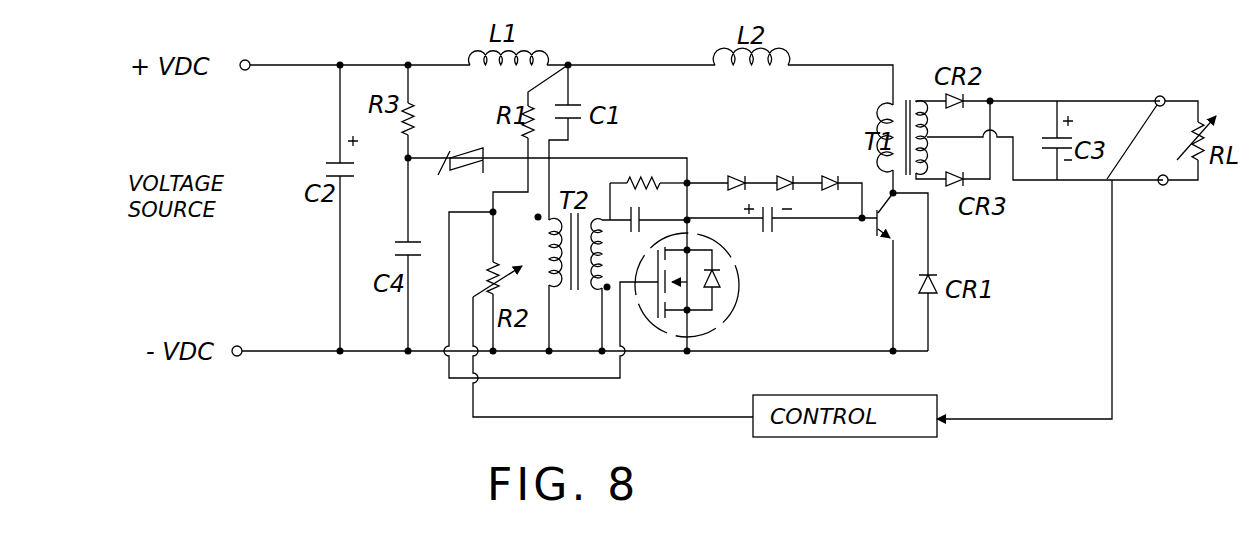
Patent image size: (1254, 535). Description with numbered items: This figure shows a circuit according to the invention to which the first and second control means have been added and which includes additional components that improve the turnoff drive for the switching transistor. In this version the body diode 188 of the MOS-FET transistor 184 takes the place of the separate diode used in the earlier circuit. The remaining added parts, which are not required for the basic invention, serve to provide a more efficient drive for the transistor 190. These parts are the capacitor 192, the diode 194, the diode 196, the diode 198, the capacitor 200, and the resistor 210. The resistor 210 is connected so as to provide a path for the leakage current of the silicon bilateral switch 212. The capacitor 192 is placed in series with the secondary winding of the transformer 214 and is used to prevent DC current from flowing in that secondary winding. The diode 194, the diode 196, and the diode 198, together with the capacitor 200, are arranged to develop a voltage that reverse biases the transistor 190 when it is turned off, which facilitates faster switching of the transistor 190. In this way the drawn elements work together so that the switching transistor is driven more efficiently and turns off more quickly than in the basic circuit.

The MOS-FET transistor 184 is at (722, 333).
The body diode 188 is at (718, 285).
The transistor 190 is at (877, 236).
The capacitor 192 is at (641, 217).
The diode 194 is at (725, 177).
The diode 196 is at (776, 177).
The diode 198 is at (825, 177).
The capacitor 200 is at (748, 243).
The resistor 210 is at (627, 180).
The silicon bilateral switch 212 is at (547, 164).
The transformer 214 is at (550, 288).